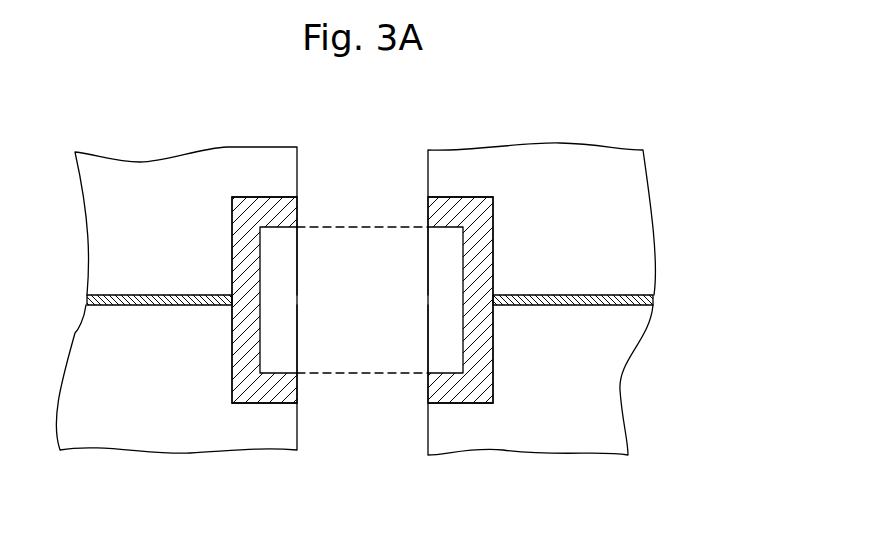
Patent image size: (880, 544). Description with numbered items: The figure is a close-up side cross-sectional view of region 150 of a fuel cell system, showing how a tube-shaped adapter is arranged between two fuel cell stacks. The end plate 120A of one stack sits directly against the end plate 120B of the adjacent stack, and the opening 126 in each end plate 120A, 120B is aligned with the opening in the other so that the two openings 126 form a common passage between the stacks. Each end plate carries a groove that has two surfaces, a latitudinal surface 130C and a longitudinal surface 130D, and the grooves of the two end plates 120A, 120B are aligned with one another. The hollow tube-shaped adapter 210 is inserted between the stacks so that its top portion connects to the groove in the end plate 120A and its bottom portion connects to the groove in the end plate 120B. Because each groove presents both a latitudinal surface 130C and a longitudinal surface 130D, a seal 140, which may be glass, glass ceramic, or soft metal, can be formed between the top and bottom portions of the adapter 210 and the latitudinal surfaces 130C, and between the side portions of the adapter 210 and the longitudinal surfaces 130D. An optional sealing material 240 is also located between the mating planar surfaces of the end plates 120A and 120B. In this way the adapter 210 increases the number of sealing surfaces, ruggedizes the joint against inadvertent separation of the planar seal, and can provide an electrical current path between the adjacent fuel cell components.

The region 150 is at (547, 112).
The end plate 120A is at (153, 192).
The end plate 120B is at (128, 427).
The opening 126 is at (377, 192).
The latitudinal surface 130C is at (268, 186).
The longitudinal surface 130D is at (222, 242).
The seal 140 is at (240, 338).
The adapter 210 is at (418, 276).
The sealing material 240 is at (130, 295).